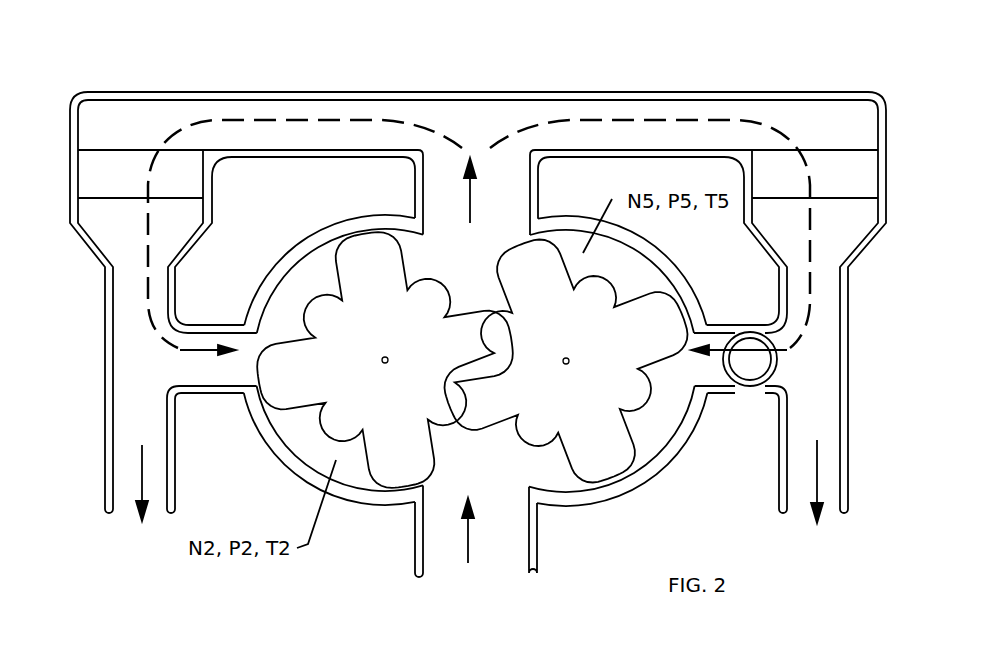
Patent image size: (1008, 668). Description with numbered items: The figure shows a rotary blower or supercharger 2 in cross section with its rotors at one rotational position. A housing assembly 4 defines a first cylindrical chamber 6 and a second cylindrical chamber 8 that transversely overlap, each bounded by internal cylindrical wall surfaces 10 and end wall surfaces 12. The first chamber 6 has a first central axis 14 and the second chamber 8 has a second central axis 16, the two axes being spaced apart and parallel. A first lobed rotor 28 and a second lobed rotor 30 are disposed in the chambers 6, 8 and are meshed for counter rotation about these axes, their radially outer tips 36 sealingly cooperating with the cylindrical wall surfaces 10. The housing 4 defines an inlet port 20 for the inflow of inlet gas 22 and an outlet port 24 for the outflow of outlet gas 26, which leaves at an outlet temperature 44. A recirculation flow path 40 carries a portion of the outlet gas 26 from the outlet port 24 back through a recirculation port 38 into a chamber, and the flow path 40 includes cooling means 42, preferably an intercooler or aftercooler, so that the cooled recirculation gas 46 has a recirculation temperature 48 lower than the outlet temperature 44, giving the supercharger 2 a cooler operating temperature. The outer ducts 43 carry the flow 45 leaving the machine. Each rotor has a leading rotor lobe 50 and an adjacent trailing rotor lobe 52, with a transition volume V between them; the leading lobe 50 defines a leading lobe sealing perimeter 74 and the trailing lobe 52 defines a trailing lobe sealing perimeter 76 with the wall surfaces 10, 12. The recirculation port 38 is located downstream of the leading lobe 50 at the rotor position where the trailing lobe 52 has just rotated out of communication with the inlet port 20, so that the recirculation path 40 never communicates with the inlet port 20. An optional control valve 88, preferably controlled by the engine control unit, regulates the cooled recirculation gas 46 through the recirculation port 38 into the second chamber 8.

The rotary blower or supercharger 2 is at (820, 60).
The housing assembly 4 is at (263, 443).
The first cylindrical chamber 6 is at (340, 240).
The second cylindrical chamber 8 is at (663, 447).
The internal cylindrical wall surfaces 10 is at (317, 253).
The end wall surfaces 12 is at (344, 447).
The first central axis 14 is at (387, 357).
The second central axis 16 is at (564, 364).
The inlet port 20 is at (530, 560).
The inlet gas 22 is at (503, 547).
The outlet port 24 is at (418, 210).
The outlet gas 26 is at (523, 176).
The first lobed rotor 28 is at (374, 277).
The second lobed rotor 30 is at (499, 421).
The radially outer tips 36 is at (424, 484).
The recirculation port 38 is at (235, 389).
The recirculation flow path 40 is at (343, 119).
The cooling means 42 is at (121, 189).
The outlet duct wall 43 is at (105, 494).
The outlet temperature 44 is at (456, 171).
The outlet flow 45 is at (152, 478).
The cooled recirculation gas 46 is at (189, 384).
The recirculation temperature 48 is at (238, 343).
The leading rotor lobe 50 is at (304, 391).
The trailing rotor lobe 52 is at (421, 459).
The leading lobe sealing perimeter 74 is at (298, 410).
The trailing lobe sealing perimeter 76 is at (392, 467).
The control valve 88 is at (758, 367).
The transition volume V is at (361, 432).